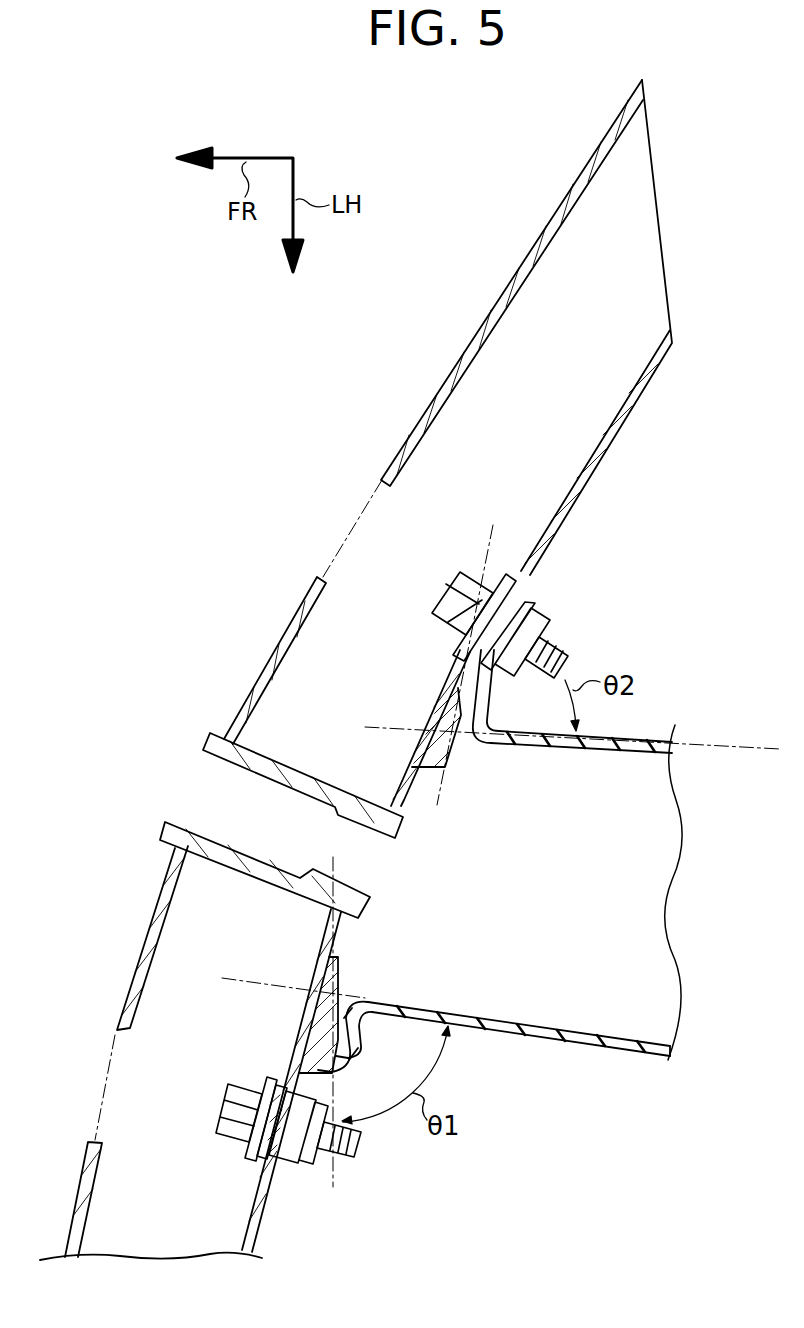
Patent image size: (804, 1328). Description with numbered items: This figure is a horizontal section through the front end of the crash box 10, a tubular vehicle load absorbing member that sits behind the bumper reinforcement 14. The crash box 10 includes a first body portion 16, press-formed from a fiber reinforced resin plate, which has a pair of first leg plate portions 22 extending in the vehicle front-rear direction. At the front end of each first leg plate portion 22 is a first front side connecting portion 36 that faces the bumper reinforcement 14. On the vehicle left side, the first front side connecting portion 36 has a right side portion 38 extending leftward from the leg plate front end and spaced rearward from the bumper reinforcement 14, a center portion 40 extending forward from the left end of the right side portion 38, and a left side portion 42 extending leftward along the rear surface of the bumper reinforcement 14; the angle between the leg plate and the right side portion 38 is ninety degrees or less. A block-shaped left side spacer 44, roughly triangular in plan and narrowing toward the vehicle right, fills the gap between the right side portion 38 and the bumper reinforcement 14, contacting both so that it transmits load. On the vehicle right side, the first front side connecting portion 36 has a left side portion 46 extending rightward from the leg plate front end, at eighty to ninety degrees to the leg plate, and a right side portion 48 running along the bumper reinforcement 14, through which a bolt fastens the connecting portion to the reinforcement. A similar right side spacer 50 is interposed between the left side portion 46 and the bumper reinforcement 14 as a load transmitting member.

The crash box 10 is at (728, 650).
The bumper reinforcement 14 is at (448, 372).
The first body portion 16 is at (641, 1060).
The first leg plate portion 22 is at (623, 757).
The first front side connecting portion 36 is at (543, 572).
The right side portion 38 is at (350, 1043).
The center portion 40 is at (282, 1181).
The left side portion 42 is at (268, 1170).
The left side spacer 44 is at (291, 1017).
The left side portion 46 is at (472, 716).
The right side portion 48 is at (548, 590).
The right side spacer 50 is at (420, 777).